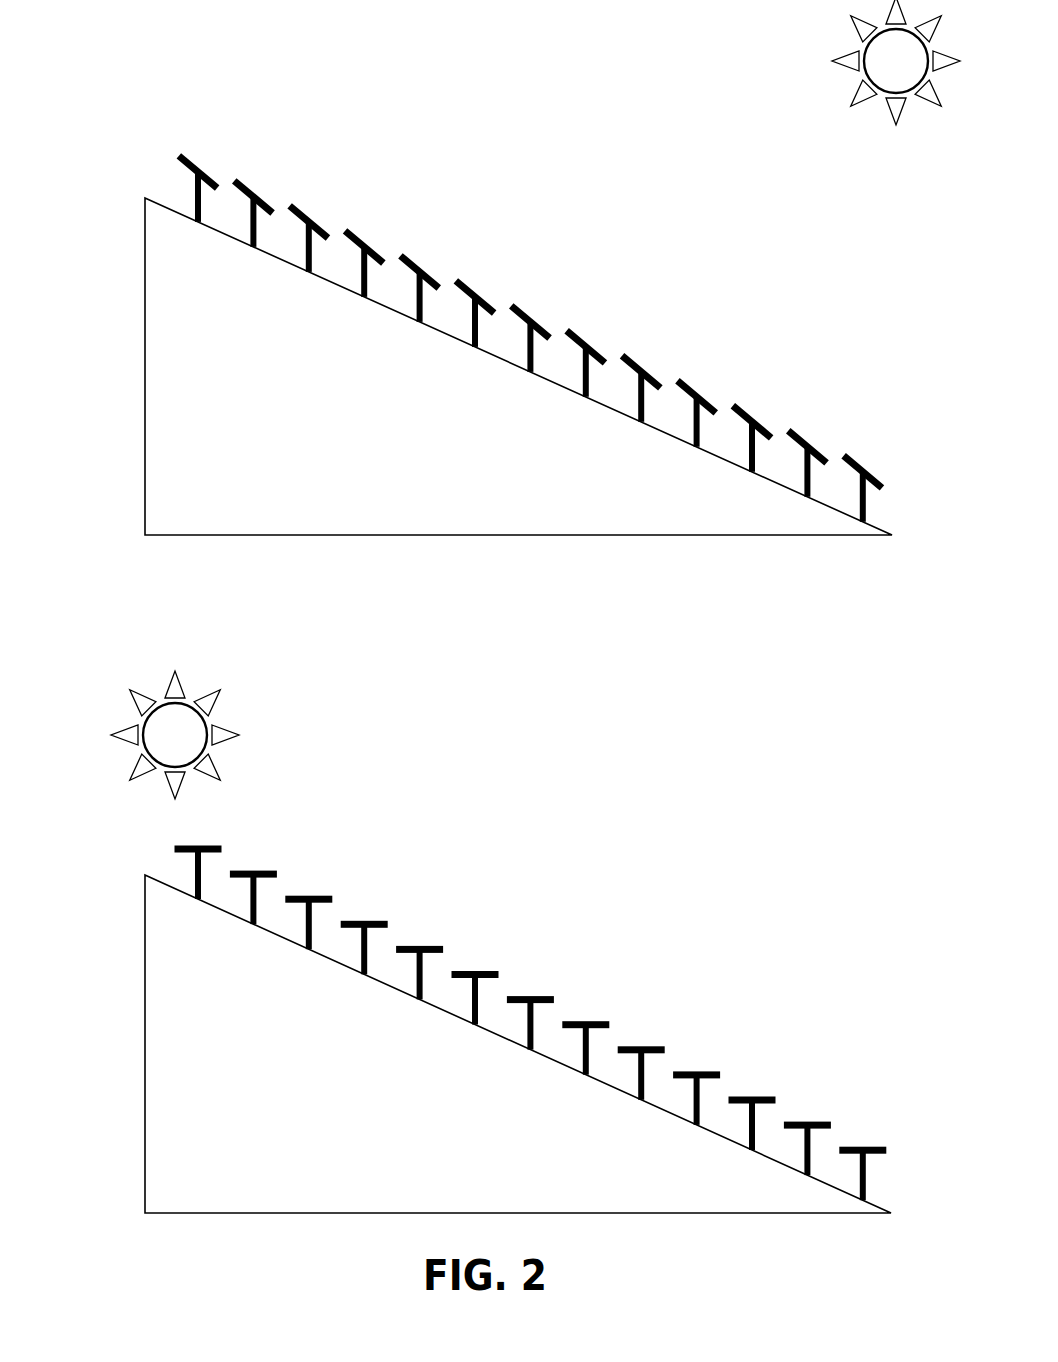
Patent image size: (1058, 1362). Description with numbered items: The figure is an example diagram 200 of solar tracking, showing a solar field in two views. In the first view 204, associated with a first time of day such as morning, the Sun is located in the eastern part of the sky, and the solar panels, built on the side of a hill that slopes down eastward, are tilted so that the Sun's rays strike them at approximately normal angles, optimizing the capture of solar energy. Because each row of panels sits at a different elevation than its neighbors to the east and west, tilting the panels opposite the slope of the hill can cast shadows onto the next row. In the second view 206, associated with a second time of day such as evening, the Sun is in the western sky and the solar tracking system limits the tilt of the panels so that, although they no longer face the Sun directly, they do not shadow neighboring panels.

The diagram 200 is at (146, 59).
The first view 204 is at (136, 124).
The second view 206 is at (845, 736).